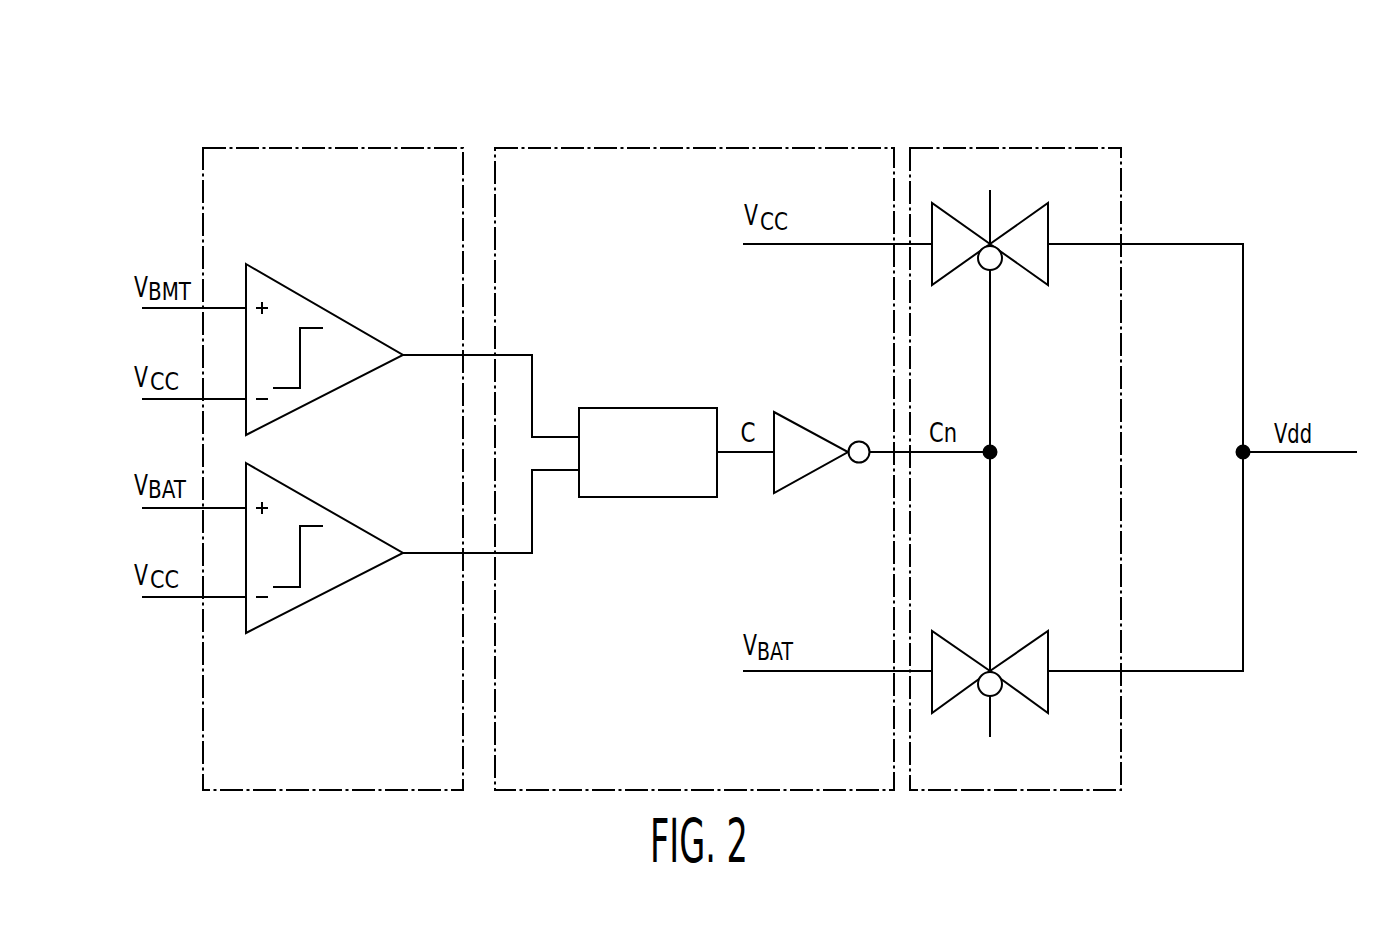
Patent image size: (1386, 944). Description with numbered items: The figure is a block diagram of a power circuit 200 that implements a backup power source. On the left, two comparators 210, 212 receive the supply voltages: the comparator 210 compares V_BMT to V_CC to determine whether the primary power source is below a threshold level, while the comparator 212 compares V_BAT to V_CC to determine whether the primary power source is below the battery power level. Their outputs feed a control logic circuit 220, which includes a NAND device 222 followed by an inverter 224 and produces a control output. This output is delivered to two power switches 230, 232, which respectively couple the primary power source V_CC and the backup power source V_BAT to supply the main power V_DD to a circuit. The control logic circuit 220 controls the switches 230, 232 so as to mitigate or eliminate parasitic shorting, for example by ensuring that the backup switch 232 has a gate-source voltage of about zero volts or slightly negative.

The power circuit 200 is at (736, 428).
The comparator 210 is at (300, 293).
The comparator 212 is at (302, 610).
The control logic circuit 220 is at (792, 145).
The NAND device 222 is at (643, 407).
The inverter 224 is at (810, 422).
The power switch 230 is at (1027, 273).
The backup switch 232 is at (1047, 630).